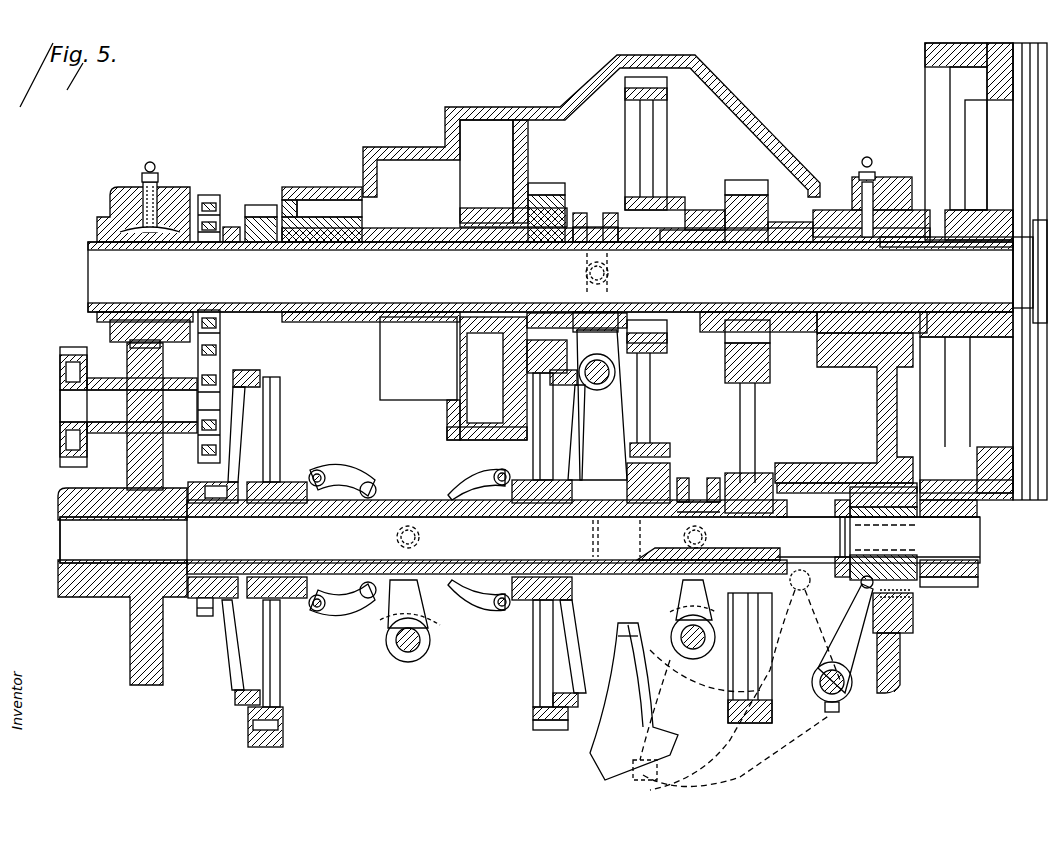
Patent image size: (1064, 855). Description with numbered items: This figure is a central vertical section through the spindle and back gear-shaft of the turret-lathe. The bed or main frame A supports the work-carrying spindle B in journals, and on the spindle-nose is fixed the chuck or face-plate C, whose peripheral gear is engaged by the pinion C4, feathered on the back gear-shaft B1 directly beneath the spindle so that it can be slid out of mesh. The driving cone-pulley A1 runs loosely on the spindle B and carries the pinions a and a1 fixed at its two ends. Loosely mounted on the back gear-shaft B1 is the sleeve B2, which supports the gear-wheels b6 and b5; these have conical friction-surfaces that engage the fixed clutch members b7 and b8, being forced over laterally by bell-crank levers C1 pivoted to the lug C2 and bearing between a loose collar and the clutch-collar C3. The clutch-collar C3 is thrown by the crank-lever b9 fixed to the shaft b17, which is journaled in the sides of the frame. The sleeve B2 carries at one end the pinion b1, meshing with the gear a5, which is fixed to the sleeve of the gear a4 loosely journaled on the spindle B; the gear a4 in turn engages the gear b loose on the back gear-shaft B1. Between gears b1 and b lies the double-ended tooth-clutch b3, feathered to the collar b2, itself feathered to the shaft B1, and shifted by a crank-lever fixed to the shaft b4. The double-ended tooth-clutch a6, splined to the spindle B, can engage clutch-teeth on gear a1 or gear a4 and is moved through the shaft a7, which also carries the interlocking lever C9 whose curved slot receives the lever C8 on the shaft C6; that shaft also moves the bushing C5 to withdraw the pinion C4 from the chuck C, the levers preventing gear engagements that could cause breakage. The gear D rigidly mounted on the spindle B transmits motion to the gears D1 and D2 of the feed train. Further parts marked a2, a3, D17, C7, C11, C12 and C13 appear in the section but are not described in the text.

The work-carrying spindle B is at (567, 271).
The back gear-shaft B1 is at (520, 537).
The sleeve B2 is at (450, 562).
The gear D is at (208, 195).
The gear D1 is at (195, 440).
The gear D2 is at (88, 452).
The flange bracket D17 is at (130, 637).
The pinion a is at (262, 205).
The pinion a1 is at (545, 185).
The cylinder a2 is at (290, 230).
The ring a3 is at (695, 205).
The gear a4 is at (736, 180).
The gear a5 is at (668, 97).
The double-ended tooth-clutch a6 is at (585, 212).
The shaft a7 is at (597, 392).
The bed or main frame A is at (877, 400).
The driving cone-pulley A1 is at (375, 150).
The gear b is at (762, 408).
The pinion or gear b1 is at (667, 475).
The collar b2 is at (720, 522).
The double-ended clutch b3 is at (706, 478).
The shaft b4 is at (740, 637).
The gear-wheel b5 is at (540, 670).
The gear-wheel b6 is at (283, 682).
The fixed clutch member b7 is at (578, 705).
The fixed clutch member b8 is at (236, 660).
The crank-lever b9 is at (418, 683).
The shaft b17 is at (422, 645).
The chuck or face-plate C is at (1000, 497).
The bell-crank lever C1 is at (913, 625).
The lug C2 is at (293, 478).
The clutch-collar C3 is at (395, 482).
The pinion C4 is at (957, 580).
The bushing C5 is at (887, 565).
The shaft C6 is at (848, 695).
The link C7 is at (700, 685).
The lever C8 is at (650, 660).
The interlocking lever C9 is at (731, 723).
The lever C11 is at (600, 396).
The lever C12 is at (845, 640).
The lever C13 is at (693, 619).